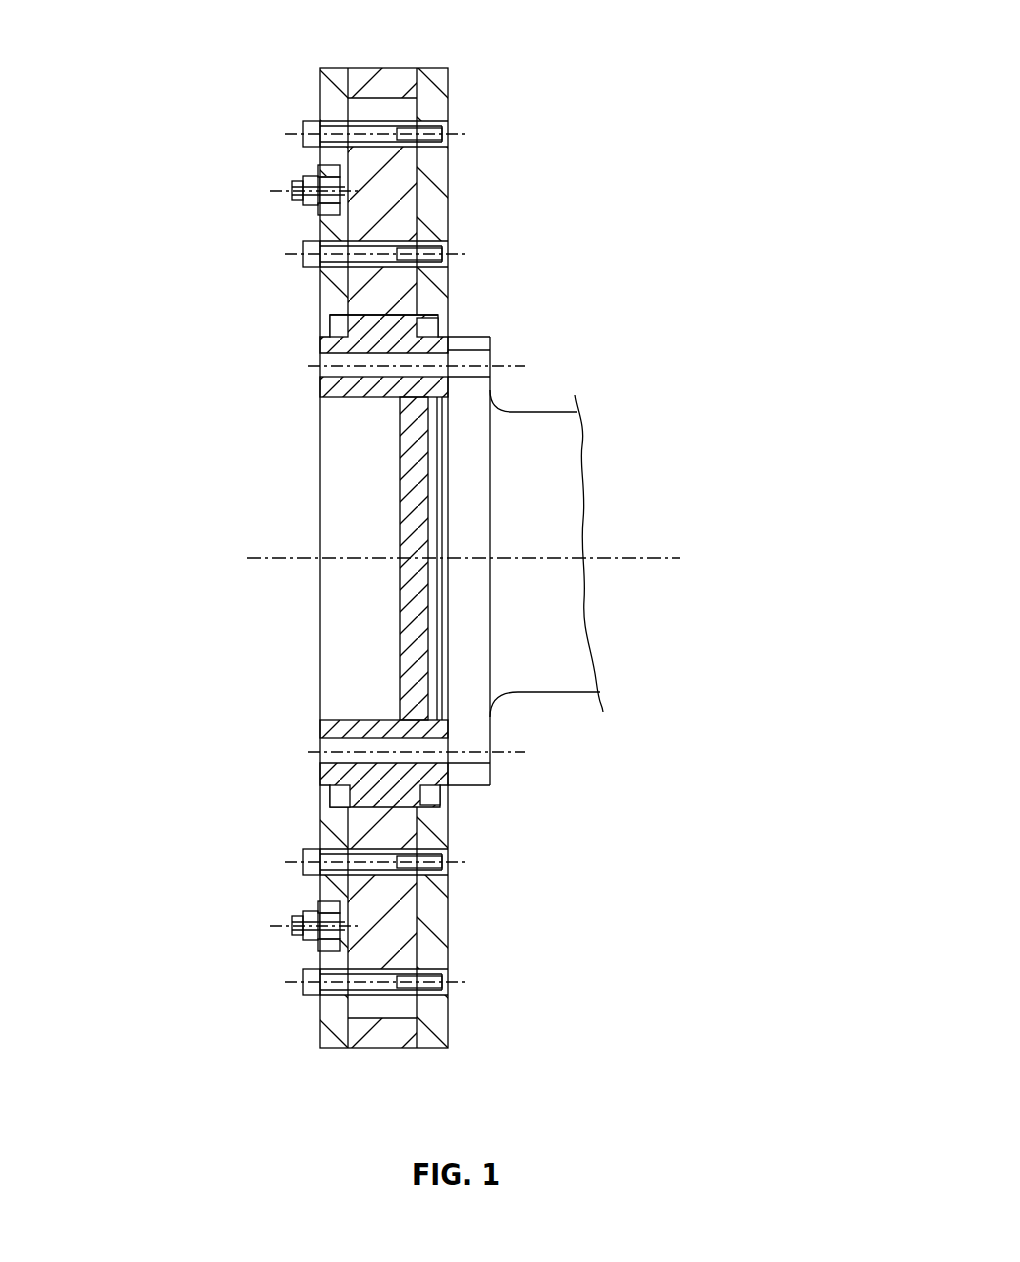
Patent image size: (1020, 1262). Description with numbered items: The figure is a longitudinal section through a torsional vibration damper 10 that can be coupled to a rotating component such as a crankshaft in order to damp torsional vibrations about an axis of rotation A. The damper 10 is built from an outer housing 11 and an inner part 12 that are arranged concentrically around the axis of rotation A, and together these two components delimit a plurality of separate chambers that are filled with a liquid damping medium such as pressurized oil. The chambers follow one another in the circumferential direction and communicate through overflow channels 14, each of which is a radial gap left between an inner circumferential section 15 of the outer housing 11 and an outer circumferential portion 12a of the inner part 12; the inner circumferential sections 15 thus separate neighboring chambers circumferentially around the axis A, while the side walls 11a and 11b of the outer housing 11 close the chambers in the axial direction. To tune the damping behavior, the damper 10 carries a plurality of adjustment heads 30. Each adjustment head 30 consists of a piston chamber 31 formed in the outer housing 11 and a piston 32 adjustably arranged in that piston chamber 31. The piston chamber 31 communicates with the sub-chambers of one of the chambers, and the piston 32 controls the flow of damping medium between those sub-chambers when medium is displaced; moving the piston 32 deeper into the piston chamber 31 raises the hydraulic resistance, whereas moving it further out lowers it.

The torsional vibration damper 10 is at (210, 83).
The outer housing 11 is at (395, 80).
The side wall 11a is at (333, 287).
The side wall 11b is at (435, 230).
The inner part 12 is at (355, 340).
The outer circumferential portion 12a is at (373, 313).
The overflow channel 14 is at (405, 322).
The inner circumferential section 15 is at (400, 305).
The adjustment head 30 is at (305, 186).
The piston chamber 31 is at (328, 953).
The piston 32 is at (328, 945).
The axis of rotation A is at (270, 558).